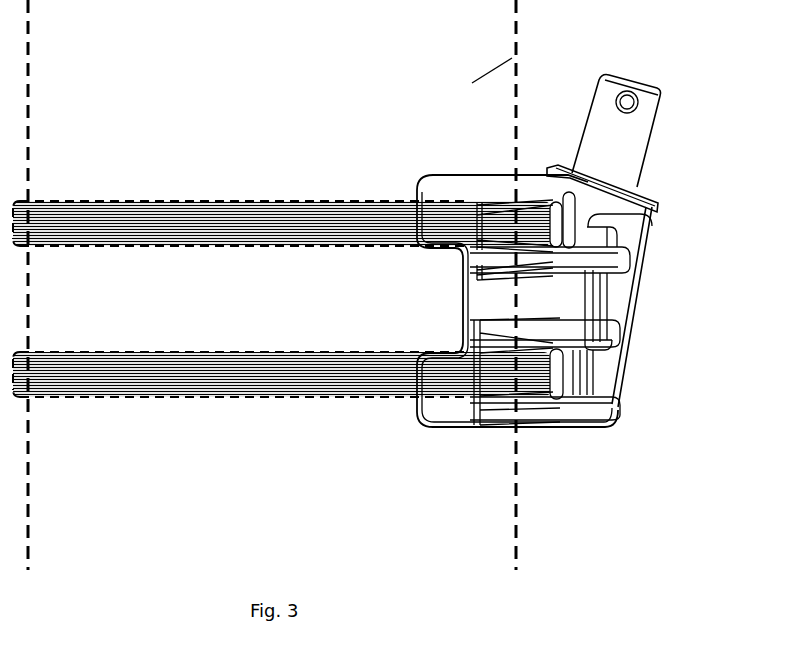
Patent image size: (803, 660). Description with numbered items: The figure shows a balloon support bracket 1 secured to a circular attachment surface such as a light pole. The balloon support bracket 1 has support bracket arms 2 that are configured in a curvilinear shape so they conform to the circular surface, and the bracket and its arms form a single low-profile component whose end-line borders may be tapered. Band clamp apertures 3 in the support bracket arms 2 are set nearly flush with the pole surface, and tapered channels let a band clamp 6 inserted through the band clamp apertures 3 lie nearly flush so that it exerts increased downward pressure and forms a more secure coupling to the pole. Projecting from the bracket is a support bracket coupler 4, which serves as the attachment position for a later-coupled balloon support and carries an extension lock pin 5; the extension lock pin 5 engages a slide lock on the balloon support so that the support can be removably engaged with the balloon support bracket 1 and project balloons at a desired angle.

The balloon support bracket 1 is at (707, 302).
The support bracket arm 2 is at (478, 183).
The band clamp aperture 3 is at (565, 235).
The support bracket coupler 4 is at (648, 142).
The extension lock pin 5 is at (628, 102).
The band clamp 6 is at (97, 208).